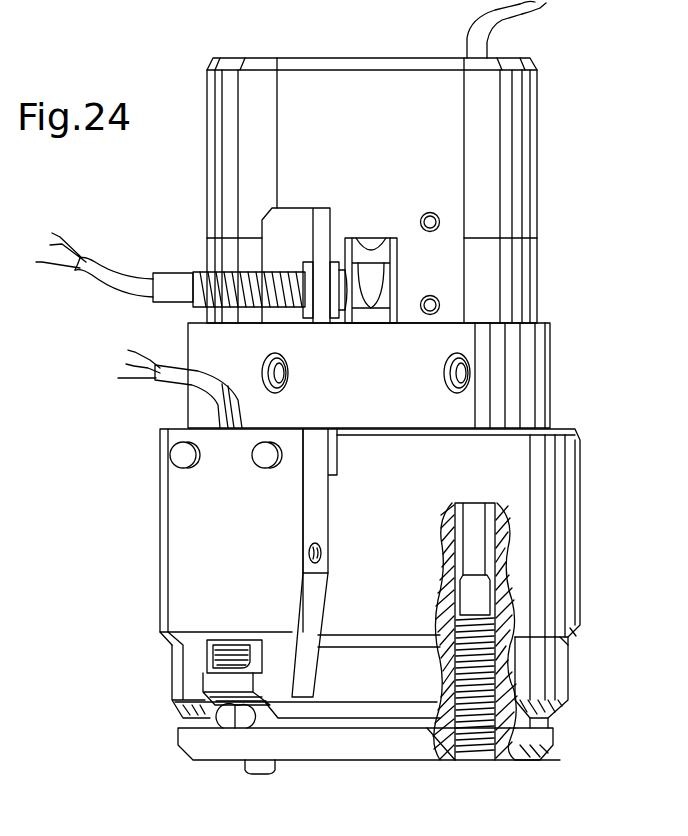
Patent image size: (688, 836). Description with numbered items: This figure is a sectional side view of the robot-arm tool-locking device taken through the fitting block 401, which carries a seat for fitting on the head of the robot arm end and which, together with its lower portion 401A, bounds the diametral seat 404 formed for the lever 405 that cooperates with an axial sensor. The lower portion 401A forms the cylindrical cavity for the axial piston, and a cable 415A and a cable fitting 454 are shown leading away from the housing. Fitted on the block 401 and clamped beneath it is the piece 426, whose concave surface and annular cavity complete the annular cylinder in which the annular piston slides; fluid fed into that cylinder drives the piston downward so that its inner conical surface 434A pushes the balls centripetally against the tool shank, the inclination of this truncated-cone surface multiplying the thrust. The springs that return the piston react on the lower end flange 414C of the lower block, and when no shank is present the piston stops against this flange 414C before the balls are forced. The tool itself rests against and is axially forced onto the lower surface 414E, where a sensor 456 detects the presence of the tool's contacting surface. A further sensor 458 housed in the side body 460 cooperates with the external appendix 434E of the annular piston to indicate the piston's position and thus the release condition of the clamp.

The fitting block 401 is at (527, 130).
The lower portion of the fitting block 401A is at (537, 280).
The diametral seat 404 is at (380, 325).
The lever 405 is at (376, 270).
The cable 415A is at (379, 29).
The piece 426 is at (563, 530).
The cable fitting 454 is at (193, 272).
The sensor 456 is at (492, 687).
The sensor 458 is at (207, 652).
The side body 460 is at (178, 540).
The inner conical surface 434A is at (215, 750).
The external appendix 434E is at (217, 685).
The lower end flange 414C is at (190, 738).
The lower surface 414E is at (407, 765).